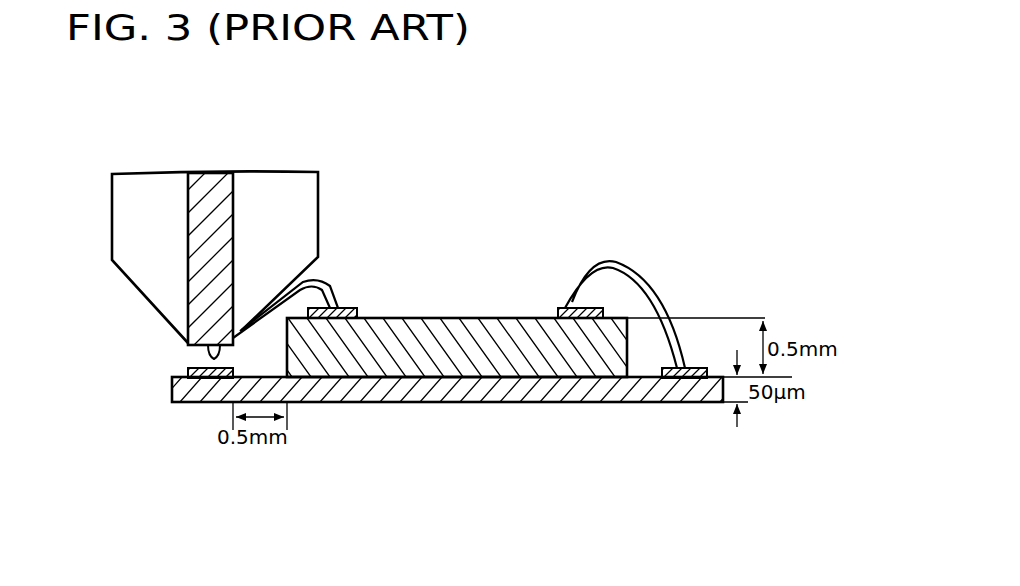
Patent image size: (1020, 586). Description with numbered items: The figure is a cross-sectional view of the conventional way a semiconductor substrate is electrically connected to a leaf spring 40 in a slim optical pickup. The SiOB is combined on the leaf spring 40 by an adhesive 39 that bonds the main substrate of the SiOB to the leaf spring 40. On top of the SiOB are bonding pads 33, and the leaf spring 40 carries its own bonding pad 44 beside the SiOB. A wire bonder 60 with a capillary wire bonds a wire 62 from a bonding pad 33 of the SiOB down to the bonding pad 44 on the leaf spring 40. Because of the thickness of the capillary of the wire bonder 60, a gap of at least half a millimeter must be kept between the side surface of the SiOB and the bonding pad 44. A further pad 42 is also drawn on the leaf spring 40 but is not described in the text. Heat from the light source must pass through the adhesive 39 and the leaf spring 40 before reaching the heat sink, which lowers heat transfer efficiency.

The bonding pad 33 is at (348, 307).
The adhesive 39 is at (447, 380).
The leaf spring 40 is at (170, 399).
The substrate bonding pad 42 is at (673, 402).
The bonding pad 44 is at (192, 370).
The wire bonder 60 is at (303, 190).
The wire 62 is at (653, 283).